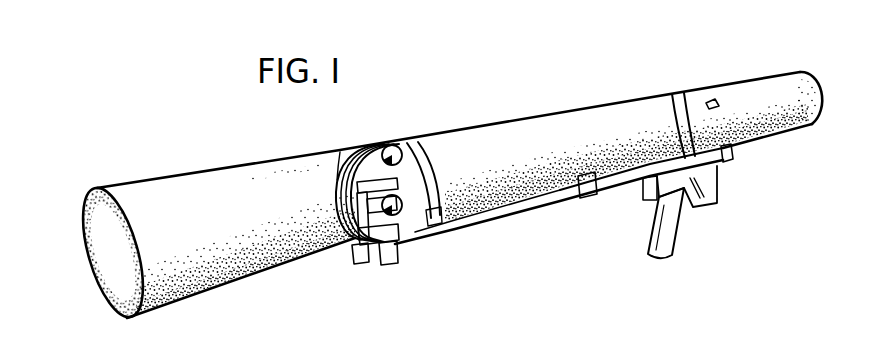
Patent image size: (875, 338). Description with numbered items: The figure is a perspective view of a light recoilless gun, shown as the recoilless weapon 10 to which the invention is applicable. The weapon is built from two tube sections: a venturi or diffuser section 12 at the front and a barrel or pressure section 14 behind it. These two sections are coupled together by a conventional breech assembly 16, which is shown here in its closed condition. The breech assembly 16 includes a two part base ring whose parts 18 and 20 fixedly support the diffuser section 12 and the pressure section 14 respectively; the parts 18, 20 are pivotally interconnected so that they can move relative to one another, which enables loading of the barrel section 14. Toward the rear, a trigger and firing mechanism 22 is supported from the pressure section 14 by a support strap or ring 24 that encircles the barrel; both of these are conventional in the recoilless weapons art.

The recoilless weapon 10 is at (263, 276).
The venturi or diffuser section 12 is at (170, 179).
The barrel or pressure section 14 is at (570, 113).
The breech assembly 16 is at (390, 142).
The base ring part 18 is at (340, 152).
The base ring part 20 is at (367, 140).
The trigger and firing mechanism 22 is at (693, 222).
The support strap or ring 24 is at (673, 94).